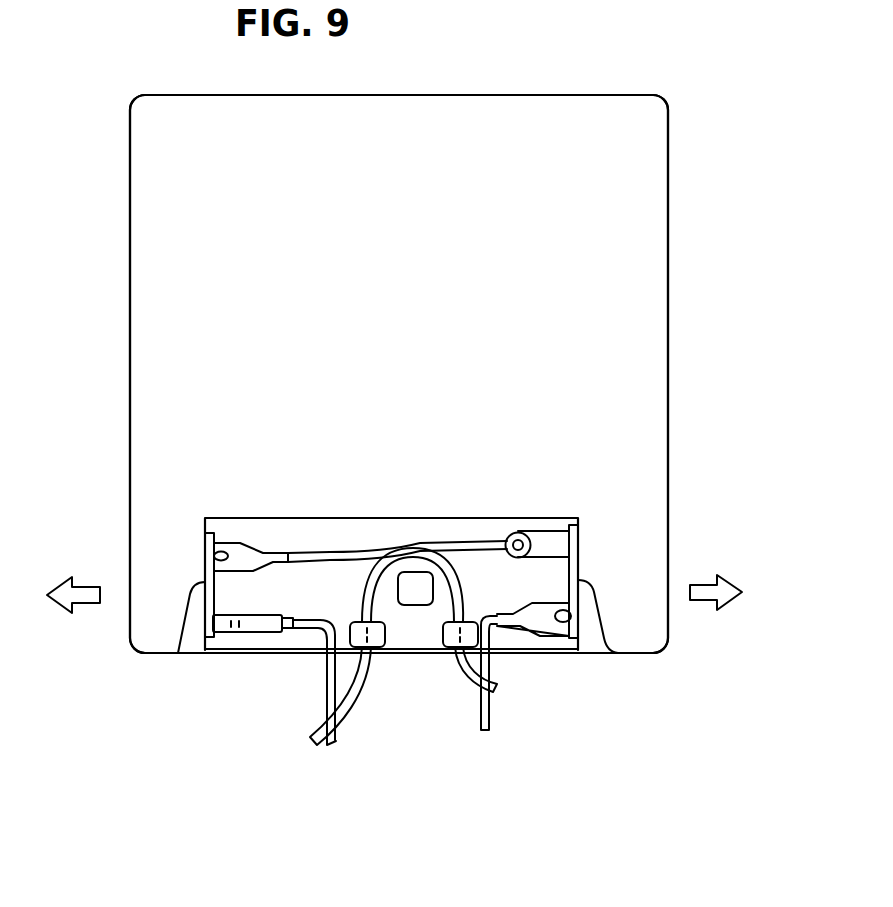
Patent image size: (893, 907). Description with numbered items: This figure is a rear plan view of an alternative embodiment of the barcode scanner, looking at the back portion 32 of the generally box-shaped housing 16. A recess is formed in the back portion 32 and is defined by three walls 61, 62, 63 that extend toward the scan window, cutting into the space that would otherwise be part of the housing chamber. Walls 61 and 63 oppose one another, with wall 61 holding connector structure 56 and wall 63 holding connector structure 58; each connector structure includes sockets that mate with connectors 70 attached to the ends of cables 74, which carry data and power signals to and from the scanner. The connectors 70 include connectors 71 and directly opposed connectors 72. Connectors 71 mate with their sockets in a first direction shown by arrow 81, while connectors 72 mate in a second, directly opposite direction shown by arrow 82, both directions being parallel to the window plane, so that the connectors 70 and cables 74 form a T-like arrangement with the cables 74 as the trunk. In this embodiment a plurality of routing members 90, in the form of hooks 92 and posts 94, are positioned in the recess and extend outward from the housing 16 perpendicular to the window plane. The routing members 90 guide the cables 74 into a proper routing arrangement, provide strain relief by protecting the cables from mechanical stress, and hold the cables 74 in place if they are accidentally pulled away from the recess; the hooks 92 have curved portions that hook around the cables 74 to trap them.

The housing 16 is at (568, 94).
The back portion 32 is at (623, 324).
The connector structure 56 is at (205, 565).
The connector structure 58 is at (578, 538).
The wall 61 is at (200, 585).
The wall 62 is at (375, 517).
The wall 63 is at (599, 587).
The connectors 70 is at (237, 548).
The connectors 71 is at (267, 620).
The opposed connectors 72 is at (540, 547).
The cables 74 is at (500, 689).
The arrow 81 is at (85, 603).
The arrow 82 is at (703, 601).
The routing members 90 is at (445, 638).
The hooks 92 is at (470, 616).
The posts 94 is at (421, 578).